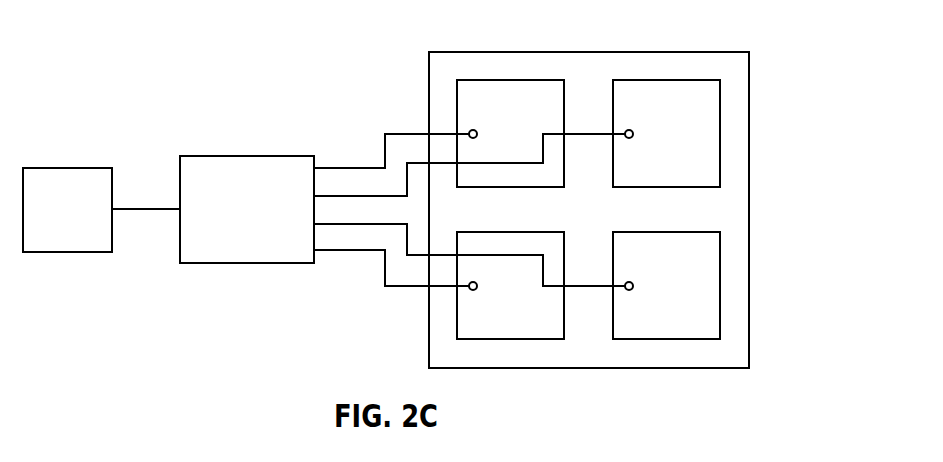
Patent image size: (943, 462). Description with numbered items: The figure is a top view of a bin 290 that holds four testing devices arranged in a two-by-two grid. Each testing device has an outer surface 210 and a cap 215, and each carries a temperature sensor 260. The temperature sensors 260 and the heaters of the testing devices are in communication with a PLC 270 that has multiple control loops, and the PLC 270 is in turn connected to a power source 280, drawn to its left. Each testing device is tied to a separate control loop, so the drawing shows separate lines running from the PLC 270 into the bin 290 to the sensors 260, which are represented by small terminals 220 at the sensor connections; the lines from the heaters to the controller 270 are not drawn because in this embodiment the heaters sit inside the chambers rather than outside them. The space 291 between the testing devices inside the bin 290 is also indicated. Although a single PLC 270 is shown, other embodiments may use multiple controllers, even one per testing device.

The power source 280 is at (90, 224).
The PLC 270 is at (270, 224).
The bin 290 is at (750, 285).
The substrate region between devices 291 is at (717, 213).
The outer surface 210 is at (722, 134).
The cap 215 is at (700, 104).
The contact terminal 220 is at (631, 129).
The temperature sensor 260 is at (558, 132).